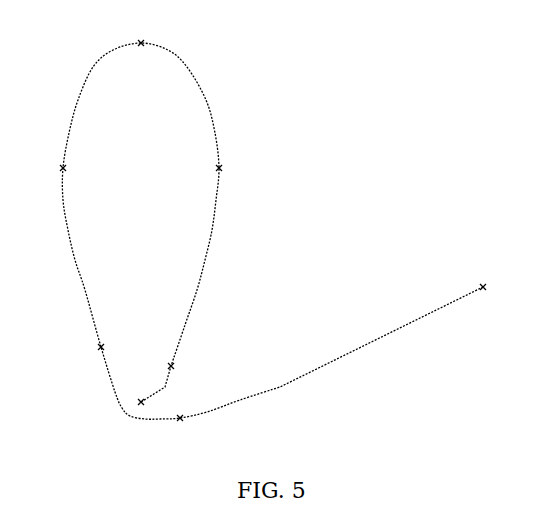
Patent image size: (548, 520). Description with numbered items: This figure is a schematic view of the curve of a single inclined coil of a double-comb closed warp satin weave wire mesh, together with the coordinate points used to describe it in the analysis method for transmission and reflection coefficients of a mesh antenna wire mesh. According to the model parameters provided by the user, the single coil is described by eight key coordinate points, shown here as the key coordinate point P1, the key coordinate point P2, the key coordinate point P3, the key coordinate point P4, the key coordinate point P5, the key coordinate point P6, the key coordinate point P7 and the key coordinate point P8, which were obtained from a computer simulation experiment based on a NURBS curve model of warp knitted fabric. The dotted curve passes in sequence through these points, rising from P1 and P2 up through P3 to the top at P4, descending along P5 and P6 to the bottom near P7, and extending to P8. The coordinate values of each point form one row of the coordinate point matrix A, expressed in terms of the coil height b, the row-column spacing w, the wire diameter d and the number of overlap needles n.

The key coordinate point P1 is at (136, 384).
The key coordinate point P2 is at (186, 360).
The key coordinate point P3 is at (232, 172).
The key coordinate point P4 is at (141, 28).
The key coordinate point P5 is at (49, 170).
The key coordinate point P6 is at (85, 343).
The key coordinate point P7 is at (183, 432).
The key coordinate point P8 is at (483, 302).